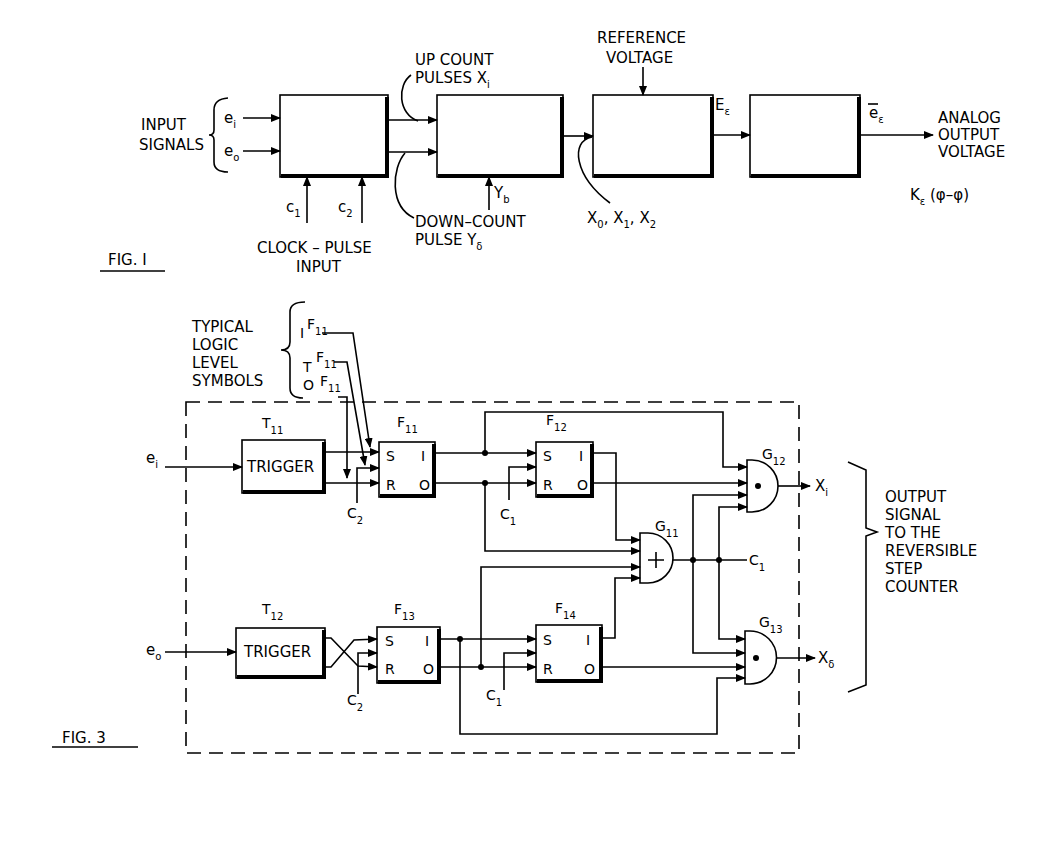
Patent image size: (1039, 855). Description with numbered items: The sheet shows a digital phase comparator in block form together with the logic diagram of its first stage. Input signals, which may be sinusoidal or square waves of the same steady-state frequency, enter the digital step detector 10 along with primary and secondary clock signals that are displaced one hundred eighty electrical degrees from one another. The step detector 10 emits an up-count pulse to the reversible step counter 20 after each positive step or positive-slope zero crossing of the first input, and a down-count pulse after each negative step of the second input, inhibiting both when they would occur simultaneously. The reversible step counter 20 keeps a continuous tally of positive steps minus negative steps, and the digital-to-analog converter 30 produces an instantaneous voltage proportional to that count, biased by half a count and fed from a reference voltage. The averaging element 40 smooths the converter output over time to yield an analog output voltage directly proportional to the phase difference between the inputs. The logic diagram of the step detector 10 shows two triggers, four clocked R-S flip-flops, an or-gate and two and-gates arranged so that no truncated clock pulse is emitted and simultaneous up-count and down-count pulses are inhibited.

In FIG. 1, the digital step detector 10 is at (288, 97).
In FIG. 3, the digital step detector 10 is at (586, 400).
In FIG. 1, the reversible step counter 20 is at (527, 163).
In FIG. 1, the digital-to-analog converter 30 is at (680, 170).
In FIG. 1, the averaging element 40 is at (762, 158).